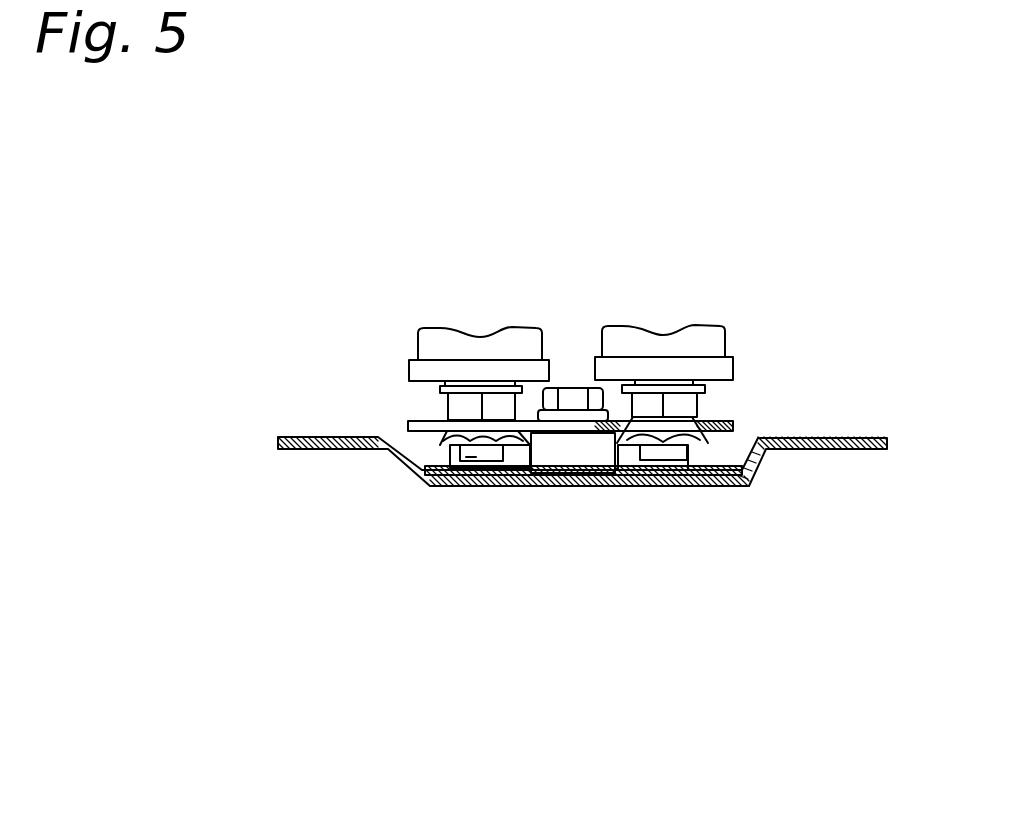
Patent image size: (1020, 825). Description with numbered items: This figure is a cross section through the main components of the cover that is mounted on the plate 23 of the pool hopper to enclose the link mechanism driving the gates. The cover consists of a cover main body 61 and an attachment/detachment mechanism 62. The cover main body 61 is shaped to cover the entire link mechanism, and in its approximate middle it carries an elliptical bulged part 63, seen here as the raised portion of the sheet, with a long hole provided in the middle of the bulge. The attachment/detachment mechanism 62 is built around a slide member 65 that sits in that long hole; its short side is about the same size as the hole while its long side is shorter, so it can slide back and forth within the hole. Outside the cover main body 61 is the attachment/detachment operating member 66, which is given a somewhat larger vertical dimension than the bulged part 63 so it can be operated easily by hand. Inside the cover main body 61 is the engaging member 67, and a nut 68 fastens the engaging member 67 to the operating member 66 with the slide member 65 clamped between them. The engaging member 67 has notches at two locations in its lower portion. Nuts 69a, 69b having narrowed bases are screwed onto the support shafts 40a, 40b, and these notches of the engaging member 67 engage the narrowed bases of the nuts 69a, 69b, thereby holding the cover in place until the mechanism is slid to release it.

The plate 23 is at (708, 577).
The support shaft 40a is at (665, 453).
The support shaft 40b is at (432, 480).
The cover main body 61 is at (847, 438).
The attachment/detachment mechanism 62 is at (614, 518).
The bulged part 63 is at (752, 466).
The slide member 65 is at (574, 447).
The attachment/detachment operating member 66 is at (478, 485).
The engaging member 67 is at (413, 428).
The nut 68 is at (573, 397).
The nut 69a is at (703, 450).
The nut 69b is at (445, 443).